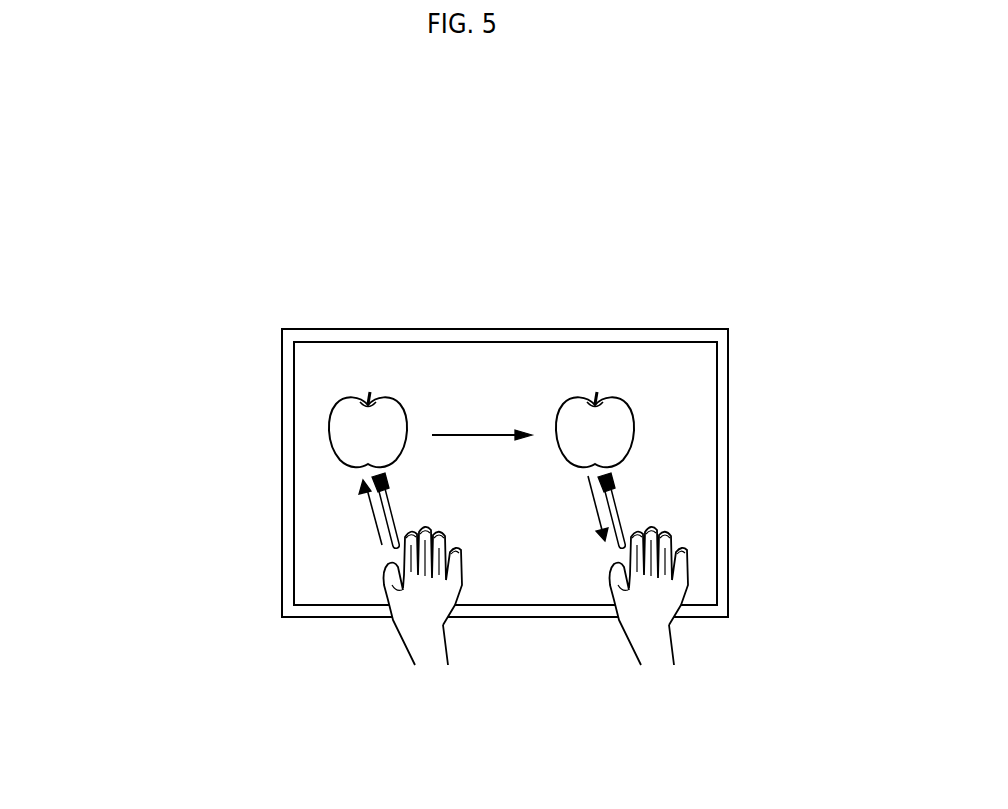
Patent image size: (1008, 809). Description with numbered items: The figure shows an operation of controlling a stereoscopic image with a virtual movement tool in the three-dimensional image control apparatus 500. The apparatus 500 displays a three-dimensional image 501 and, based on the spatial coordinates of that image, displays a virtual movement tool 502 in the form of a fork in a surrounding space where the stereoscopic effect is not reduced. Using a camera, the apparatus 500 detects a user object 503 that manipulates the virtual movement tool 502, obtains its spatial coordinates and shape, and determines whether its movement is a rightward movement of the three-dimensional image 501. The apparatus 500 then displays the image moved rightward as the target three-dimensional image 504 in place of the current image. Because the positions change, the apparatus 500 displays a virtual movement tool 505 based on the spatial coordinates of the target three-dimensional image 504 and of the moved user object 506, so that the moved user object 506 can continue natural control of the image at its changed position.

The 3D image control apparatus 500 is at (282, 470).
The 3D image 501 is at (356, 404).
The virtual movement tool 502 is at (387, 487).
The user object 503 is at (410, 622).
The target 3D image 504 is at (589, 404).
The virtual movement tool 505 is at (612, 488).
The moved user object 506 is at (638, 622).